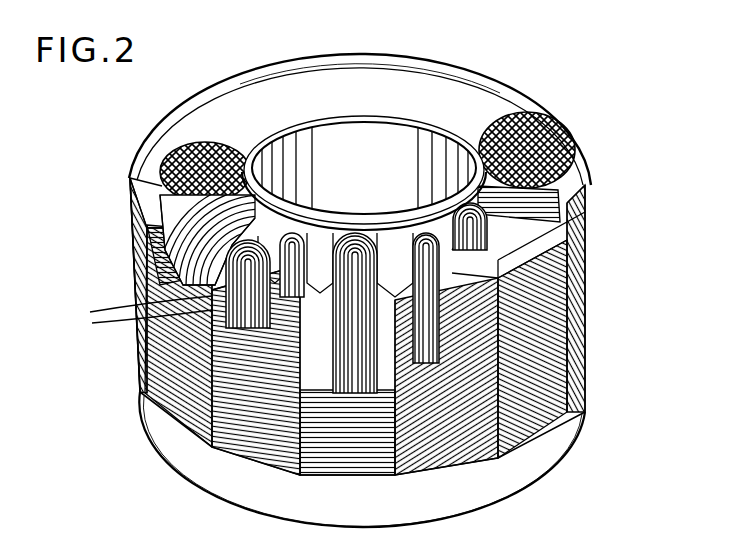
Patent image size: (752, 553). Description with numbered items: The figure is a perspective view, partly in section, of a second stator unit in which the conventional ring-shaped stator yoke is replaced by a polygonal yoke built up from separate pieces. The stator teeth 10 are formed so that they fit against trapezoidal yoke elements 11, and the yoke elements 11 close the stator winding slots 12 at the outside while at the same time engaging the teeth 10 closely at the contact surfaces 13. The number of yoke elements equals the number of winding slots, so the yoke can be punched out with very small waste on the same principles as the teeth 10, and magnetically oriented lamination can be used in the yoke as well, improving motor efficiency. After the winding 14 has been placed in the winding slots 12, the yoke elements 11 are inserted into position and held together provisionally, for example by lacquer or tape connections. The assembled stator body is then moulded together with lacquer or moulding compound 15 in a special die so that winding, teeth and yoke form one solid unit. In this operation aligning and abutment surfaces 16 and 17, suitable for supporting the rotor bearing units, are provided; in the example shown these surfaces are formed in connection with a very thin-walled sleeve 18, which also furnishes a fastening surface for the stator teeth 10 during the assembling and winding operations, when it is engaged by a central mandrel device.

The stator teeth 10 is at (545, 210).
The yoke elements 11 is at (535, 245).
The stator winding slots 12 is at (537, 268).
The contact surfaces 13 is at (134, 313).
The winding 14 is at (130, 177).
The moulding compound 15 is at (542, 152).
The aligning and abutment surface 16 is at (390, 132).
The aligning and abutment surface 17 is at (425, 125).
The thin-walled sleeve 18 is at (316, 167).